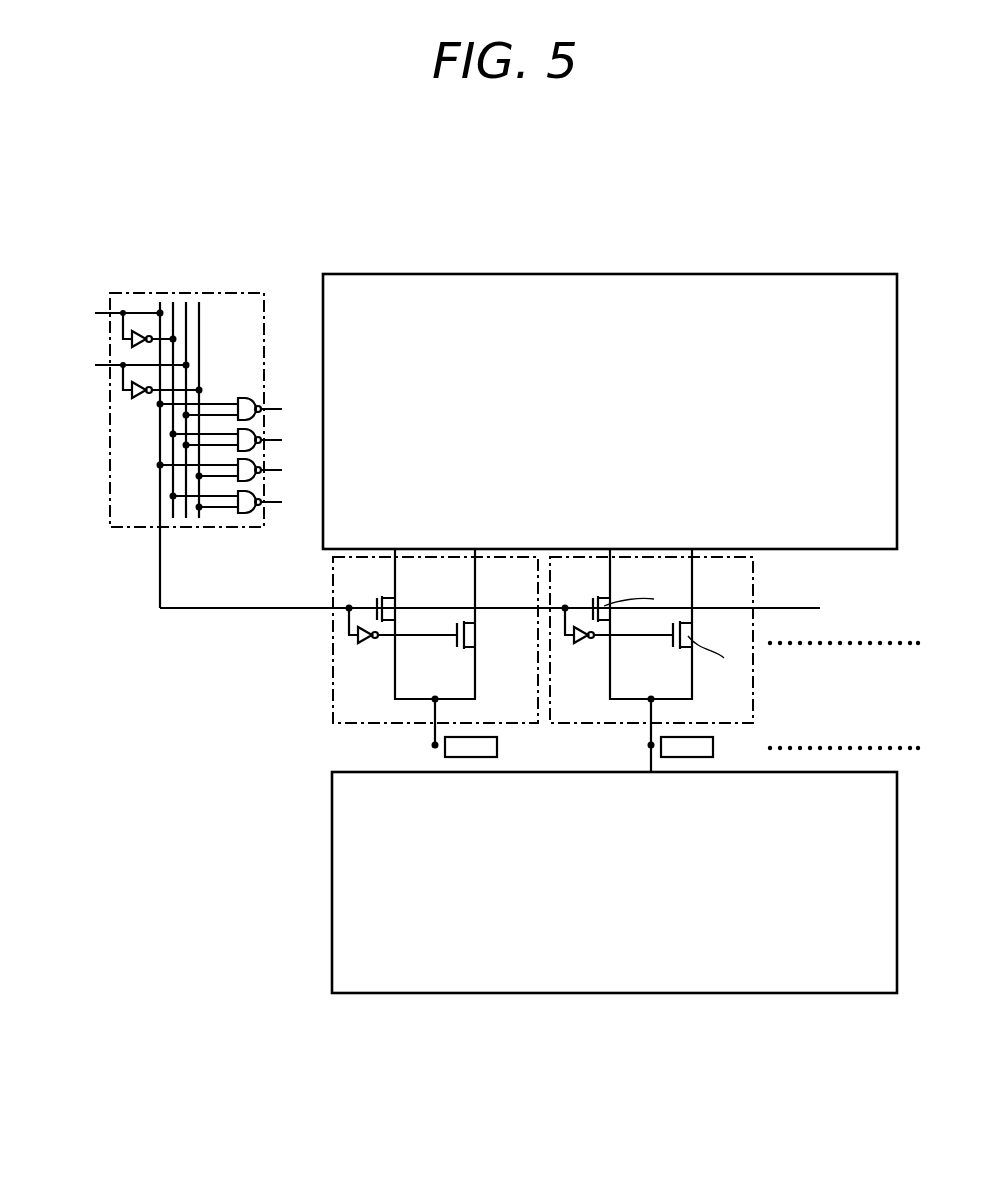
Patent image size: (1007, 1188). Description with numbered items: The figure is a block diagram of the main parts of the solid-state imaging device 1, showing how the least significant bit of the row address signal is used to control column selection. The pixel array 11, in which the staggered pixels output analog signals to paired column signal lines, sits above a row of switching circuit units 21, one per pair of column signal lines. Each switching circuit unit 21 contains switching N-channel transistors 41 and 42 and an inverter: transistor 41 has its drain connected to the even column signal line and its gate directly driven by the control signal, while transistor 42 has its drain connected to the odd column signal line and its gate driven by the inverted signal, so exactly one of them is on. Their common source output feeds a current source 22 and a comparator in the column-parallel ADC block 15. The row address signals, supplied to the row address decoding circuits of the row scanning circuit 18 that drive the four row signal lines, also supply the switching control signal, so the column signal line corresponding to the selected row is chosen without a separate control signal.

The solid-state imaging device 1 is at (585, 233).
The pixel array 11 is at (625, 292).
The column-parallel ADC block 15 is at (818, 784).
The row scanning circuit 18 is at (265, 297).
The switching circuit unit 21 is at (508, 550).
The current source 22 is at (705, 750).
The switching N-channel transistor 41 is at (388, 606).
The switching N-channel transistor 42 is at (472, 636).